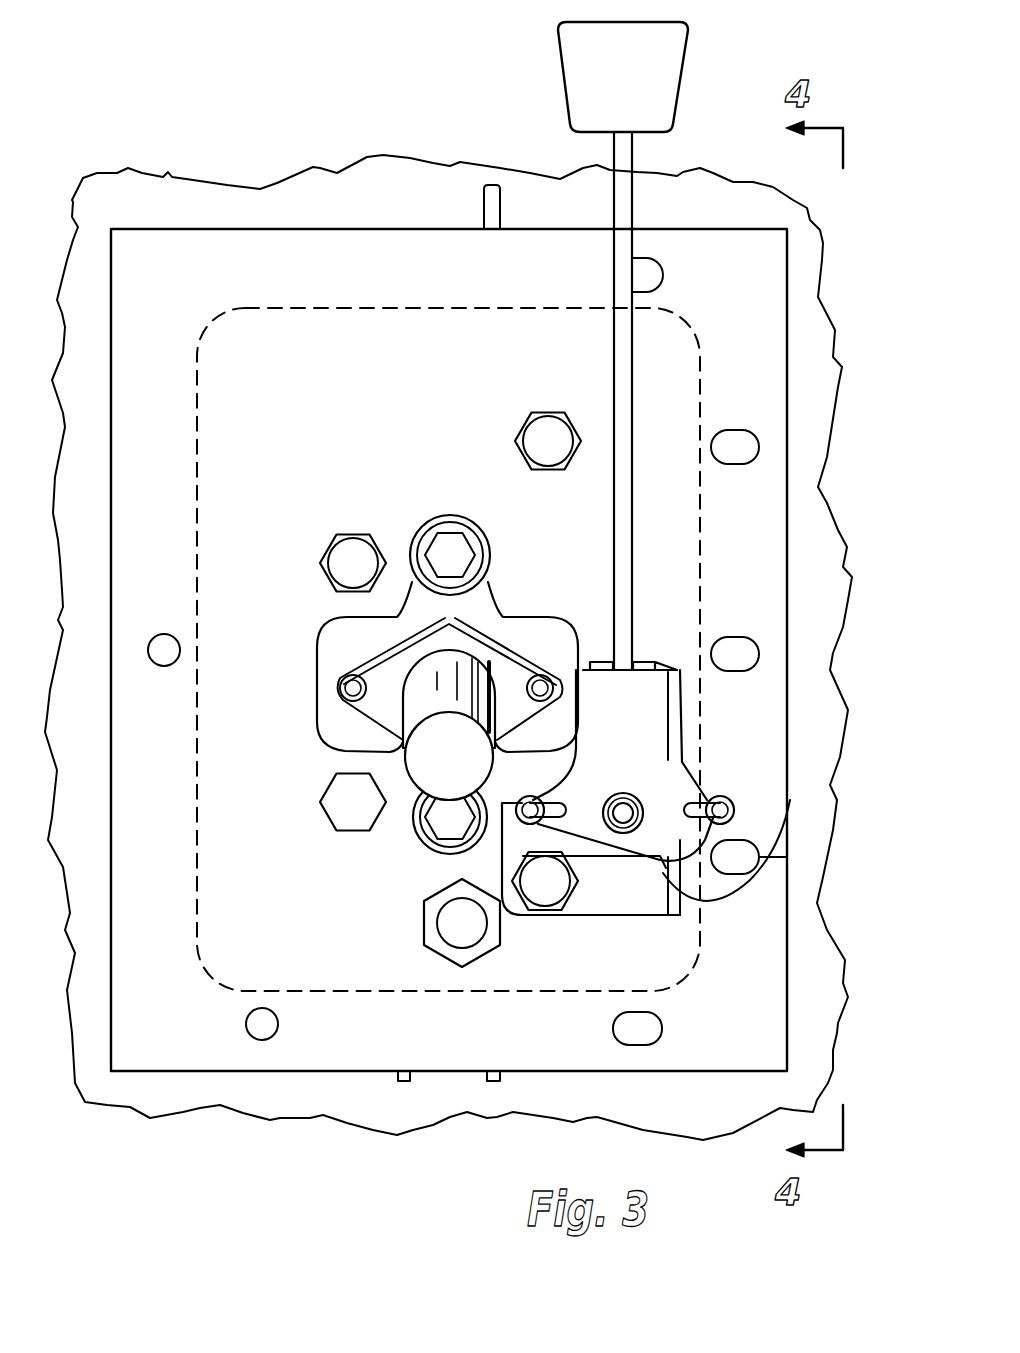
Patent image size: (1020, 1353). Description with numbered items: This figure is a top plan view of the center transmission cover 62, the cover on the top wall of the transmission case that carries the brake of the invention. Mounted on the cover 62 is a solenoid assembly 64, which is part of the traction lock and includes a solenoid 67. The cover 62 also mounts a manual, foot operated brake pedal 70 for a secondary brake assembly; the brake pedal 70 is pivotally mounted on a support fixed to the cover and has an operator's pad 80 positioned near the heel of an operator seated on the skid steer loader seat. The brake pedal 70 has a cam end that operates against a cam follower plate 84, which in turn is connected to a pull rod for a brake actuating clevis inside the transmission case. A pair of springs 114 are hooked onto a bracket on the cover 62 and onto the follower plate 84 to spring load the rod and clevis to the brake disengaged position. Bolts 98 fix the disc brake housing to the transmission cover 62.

The center cover 62 is at (287, 241).
The solenoid assembly 64 is at (356, 645).
The solenoid 67 is at (417, 764).
The brake pedal 70 is at (620, 513).
The operator's pad 80 is at (566, 82).
The cam follower plate 84 is at (648, 730).
The bolts 98 is at (541, 435).
The springs 114 is at (515, 824).